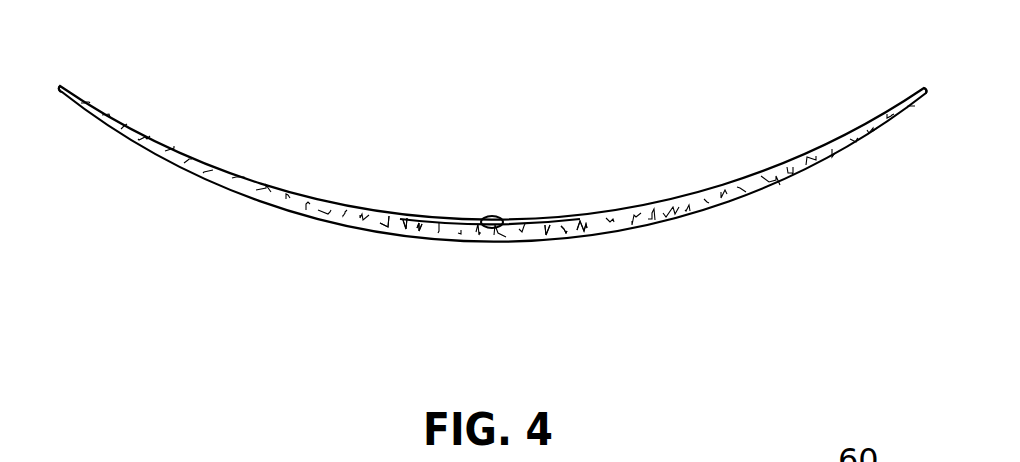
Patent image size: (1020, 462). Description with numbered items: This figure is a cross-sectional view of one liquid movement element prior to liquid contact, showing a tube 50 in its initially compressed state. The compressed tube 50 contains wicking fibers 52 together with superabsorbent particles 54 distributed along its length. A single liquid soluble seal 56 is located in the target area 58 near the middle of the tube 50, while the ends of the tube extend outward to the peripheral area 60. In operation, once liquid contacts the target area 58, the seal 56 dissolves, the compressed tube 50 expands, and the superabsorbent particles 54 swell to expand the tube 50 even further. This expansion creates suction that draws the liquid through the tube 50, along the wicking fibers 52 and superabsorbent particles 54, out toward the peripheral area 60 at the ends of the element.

The tube 50 is at (708, 158).
The wicking fibers 52 is at (432, 227).
The superabsorbent particles 54 is at (571, 226).
The liquid soluble seal 56 is at (487, 215).
The target area 58 is at (533, 114).
The peripheral area 60 is at (71, 66).